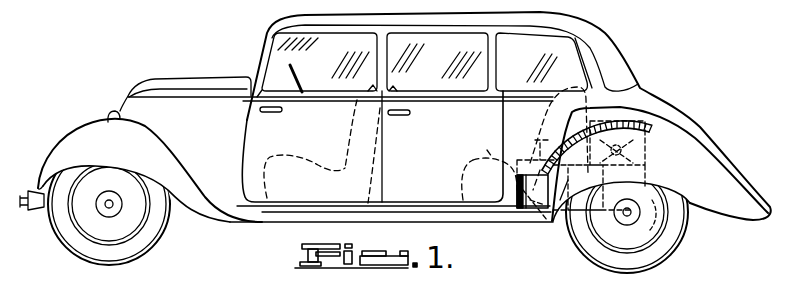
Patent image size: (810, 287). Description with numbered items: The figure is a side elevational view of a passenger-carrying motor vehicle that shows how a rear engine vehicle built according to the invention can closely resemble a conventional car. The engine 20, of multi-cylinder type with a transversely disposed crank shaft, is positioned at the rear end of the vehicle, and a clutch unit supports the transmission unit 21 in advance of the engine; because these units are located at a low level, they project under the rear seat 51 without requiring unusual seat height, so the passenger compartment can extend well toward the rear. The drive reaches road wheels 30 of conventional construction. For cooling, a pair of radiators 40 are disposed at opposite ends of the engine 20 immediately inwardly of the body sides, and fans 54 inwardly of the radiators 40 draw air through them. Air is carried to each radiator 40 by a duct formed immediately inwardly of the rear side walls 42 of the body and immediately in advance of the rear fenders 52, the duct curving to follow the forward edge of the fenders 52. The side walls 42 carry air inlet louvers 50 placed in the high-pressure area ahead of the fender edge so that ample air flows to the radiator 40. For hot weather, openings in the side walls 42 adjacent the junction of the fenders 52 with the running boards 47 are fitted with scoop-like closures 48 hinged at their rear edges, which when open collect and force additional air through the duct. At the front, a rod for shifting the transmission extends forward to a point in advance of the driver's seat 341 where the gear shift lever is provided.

The engine 20 is at (548, 138).
The transmission unit 21 is at (475, 157).
The road wheels 30 is at (653, 253).
The radiators 40 is at (657, 127).
The rear side walls 42 is at (543, 126).
The running boards 47 is at (452, 224).
The scoop-like closures 48 is at (530, 205).
The air inlet louvers 50 is at (576, 138).
The rear seat 51 is at (487, 140).
The rear fenders 52 is at (562, 198).
The fans 54 is at (647, 163).
The driver's seat 341 is at (305, 153).